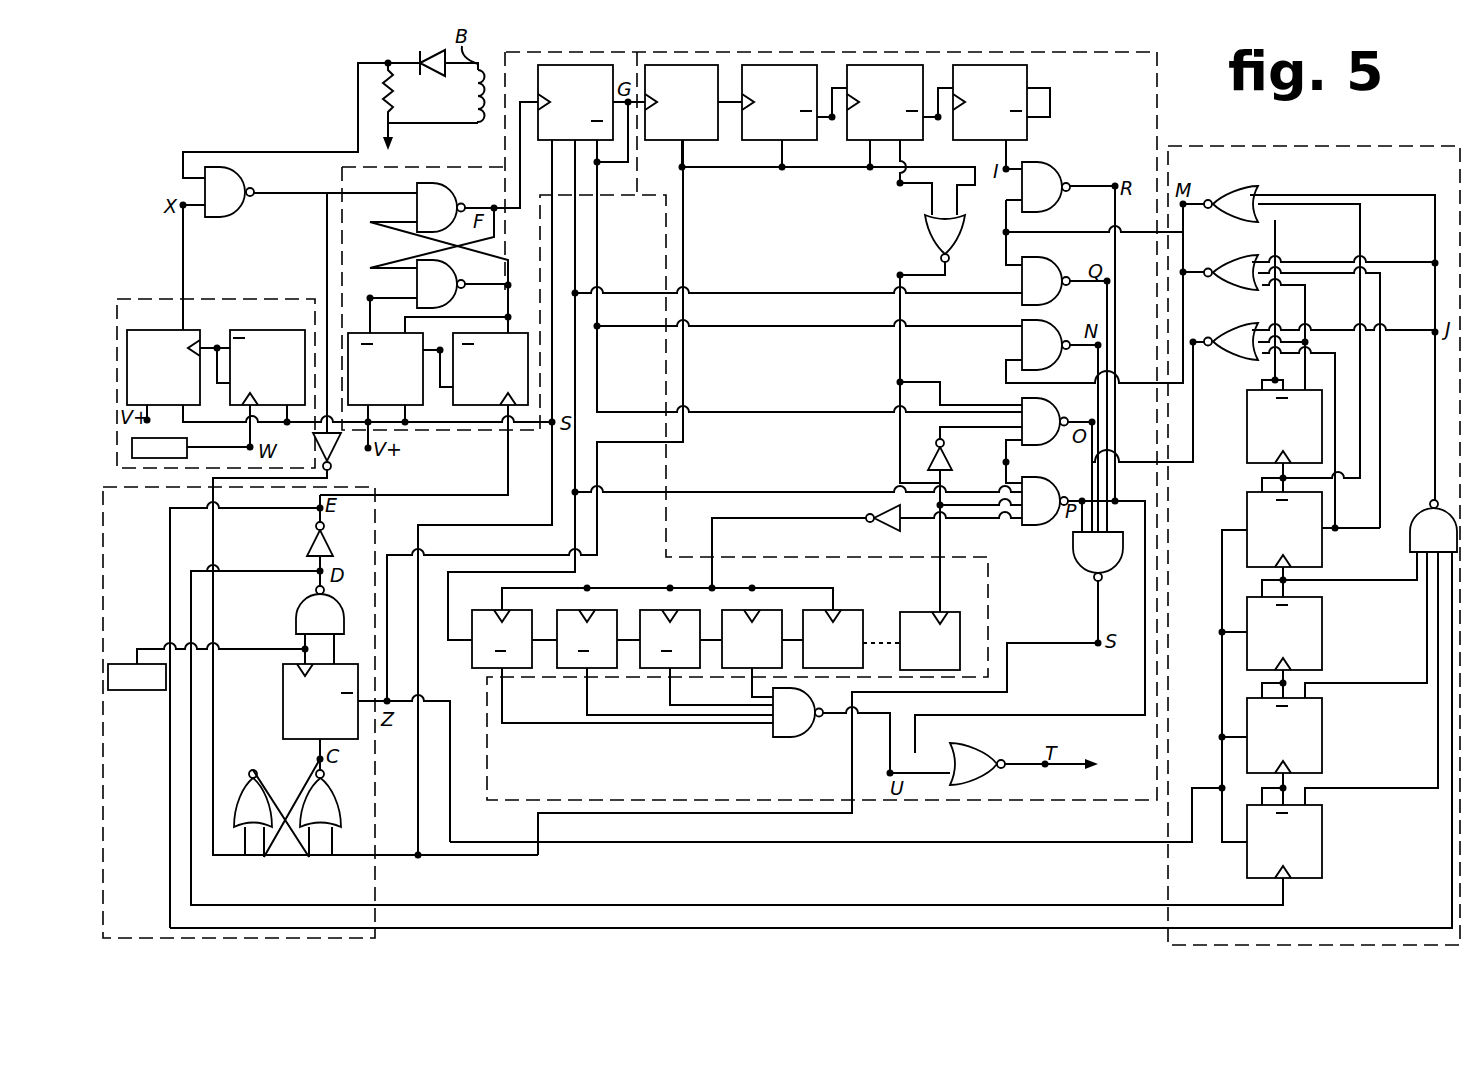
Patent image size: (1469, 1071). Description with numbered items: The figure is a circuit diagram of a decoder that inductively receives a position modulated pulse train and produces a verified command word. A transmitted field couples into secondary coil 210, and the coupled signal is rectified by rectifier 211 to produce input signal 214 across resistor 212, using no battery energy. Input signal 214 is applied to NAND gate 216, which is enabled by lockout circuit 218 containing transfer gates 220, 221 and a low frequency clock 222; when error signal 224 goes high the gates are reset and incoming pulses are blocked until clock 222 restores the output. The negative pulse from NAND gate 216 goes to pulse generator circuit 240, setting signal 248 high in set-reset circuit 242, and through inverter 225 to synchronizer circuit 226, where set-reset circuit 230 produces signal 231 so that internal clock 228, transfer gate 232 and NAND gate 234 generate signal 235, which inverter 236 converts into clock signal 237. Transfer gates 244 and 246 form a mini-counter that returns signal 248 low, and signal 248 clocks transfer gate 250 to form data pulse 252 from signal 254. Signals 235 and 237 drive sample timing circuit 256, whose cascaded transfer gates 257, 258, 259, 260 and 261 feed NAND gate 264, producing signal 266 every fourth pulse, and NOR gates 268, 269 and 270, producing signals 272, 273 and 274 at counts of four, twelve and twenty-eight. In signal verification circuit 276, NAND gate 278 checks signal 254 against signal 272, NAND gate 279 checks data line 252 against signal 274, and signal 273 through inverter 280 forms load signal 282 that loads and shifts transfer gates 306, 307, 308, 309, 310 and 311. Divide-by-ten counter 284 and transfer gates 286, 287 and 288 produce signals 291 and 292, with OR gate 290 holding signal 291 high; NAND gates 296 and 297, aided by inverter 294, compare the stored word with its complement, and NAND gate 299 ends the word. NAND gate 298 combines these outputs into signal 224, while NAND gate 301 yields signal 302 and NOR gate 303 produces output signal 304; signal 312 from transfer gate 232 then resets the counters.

The secondary coil 210 is at (486, 66).
The rectifier 211 is at (436, 52).
The resistor 212 is at (398, 97).
The input signal 214 is at (358, 100).
The NAND gate 216 is at (243, 180).
The lockout circuit 218 is at (160, 299).
The transfer gate 220 is at (283, 330).
The transfer gate 221 is at (168, 330).
The low frequency clock 222 is at (187, 438).
The signal S 224 is at (552, 510).
The inverter 225 is at (337, 452).
The synchronizer circuit 226 is at (165, 495).
The internal clock 228 is at (125, 664).
The set-reset circuit 230 is at (288, 853).
The signal C 231 is at (318, 758).
The transfer gate 232 is at (283, 706).
The NAND gate 234 is at (296, 612).
The signal D 235 is at (310, 578).
The inverter 236 is at (307, 546).
The signal E 237 is at (318, 512).
The pulse generator circuit 240 is at (610, 52).
The set-reset circuit 242 is at (418, 253).
The transfer gate 244 is at (452, 428).
The transfer gate 246 is at (413, 407).
The signal F 248 is at (500, 208).
The transfer gate 250 is at (546, 65).
The data pulse 252 is at (596, 262).
The signal G 254 is at (600, 244).
The sample timing circuit 256 is at (1353, 146).
The transfer gate 257 is at (1322, 855).
The transfer gate 258 is at (1322, 741).
The transfer gate 259 is at (1322, 636).
The transfer gate 260 is at (1322, 548).
The transfer gate 261 is at (1247, 435).
The NAND gate 264 is at (1428, 508).
The signal J 266 is at (1435, 340).
The NOR gate 268 is at (1283, 330).
The NOR gate 269 is at (1268, 246).
The NOR gate 270 is at (1232, 186).
The signal K 272 is at (1186, 276).
The signal L 273 is at (1196, 346).
The signal M 274 is at (1186, 208).
The signal verification circuit 276 is at (866, 52).
The NAND gate 278 is at (1050, 318).
The NAND gate 279 is at (1048, 258).
The inverter 280 is at (874, 525).
The load signal 282 is at (793, 512).
The divide-by-ten counter 284 is at (696, 140).
The transfer gate 286 is at (806, 140).
The transfer gate 287 is at (908, 140).
The transfer gate 288 is at (1027, 120).
The OR gate 290 is at (925, 232).
The signal H 291 is at (900, 183).
The signal I 292 is at (1008, 152).
The inverter 294 is at (928, 460).
The NAND gate 296 is at (1048, 405).
The NAND gate 297 is at (1046, 483).
The NAND gate 298 is at (1073, 570).
The NAND gate 299 is at (1050, 182).
The NAND gate 301 is at (796, 737).
The signal U 302 is at (880, 775).
The NOR gate 303 is at (976, 743).
The signal T 304 is at (1045, 768).
The transfer gate 306 is at (515, 598).
The transfer gate 307 is at (599, 598).
The transfer gate 308 is at (681, 598).
The transfer gate 309 is at (763, 598).
The transfer gate 310 is at (847, 598).
The transfer gate 311 is at (944, 598).
The Q-bar output signal 312 is at (458, 812).